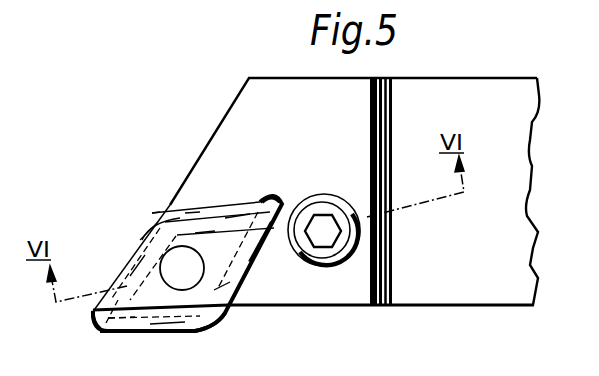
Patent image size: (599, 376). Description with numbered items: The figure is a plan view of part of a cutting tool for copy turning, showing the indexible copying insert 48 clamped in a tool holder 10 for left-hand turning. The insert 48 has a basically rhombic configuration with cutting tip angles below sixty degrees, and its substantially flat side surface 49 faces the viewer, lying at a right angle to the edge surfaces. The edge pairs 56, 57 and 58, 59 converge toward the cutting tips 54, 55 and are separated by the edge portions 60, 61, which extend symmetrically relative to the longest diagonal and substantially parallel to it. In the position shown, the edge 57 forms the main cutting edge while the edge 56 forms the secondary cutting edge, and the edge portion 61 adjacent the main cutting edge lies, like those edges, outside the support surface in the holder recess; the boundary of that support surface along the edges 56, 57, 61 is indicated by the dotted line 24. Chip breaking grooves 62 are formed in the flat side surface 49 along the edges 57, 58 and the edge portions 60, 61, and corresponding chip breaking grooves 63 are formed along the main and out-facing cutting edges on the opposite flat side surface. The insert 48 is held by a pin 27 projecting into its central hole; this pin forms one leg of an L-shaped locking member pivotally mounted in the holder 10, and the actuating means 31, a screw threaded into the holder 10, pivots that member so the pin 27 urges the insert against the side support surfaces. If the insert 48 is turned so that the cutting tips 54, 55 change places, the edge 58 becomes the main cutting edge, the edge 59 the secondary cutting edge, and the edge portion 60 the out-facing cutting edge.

The holder 10 is at (507, 243).
The dotted line 24 is at (109, 333).
The pin 27 is at (182, 277).
The actuating means 31 is at (317, 203).
The insert 48 is at (115, 276).
The flat side surface 49 is at (201, 235).
The cutting tip 54 is at (90, 314).
The cutting tip 55 is at (276, 196).
The edge 56 is at (140, 239).
The edge 57 is at (114, 332).
The edge 58 is at (193, 214).
The edge 59 is at (263, 255).
The edge portion 60 is at (158, 213).
The edge portion 61 is at (213, 318).
The chip breaking grooves 62 is at (237, 222).
The chip breaking grooves 63 is at (137, 265).